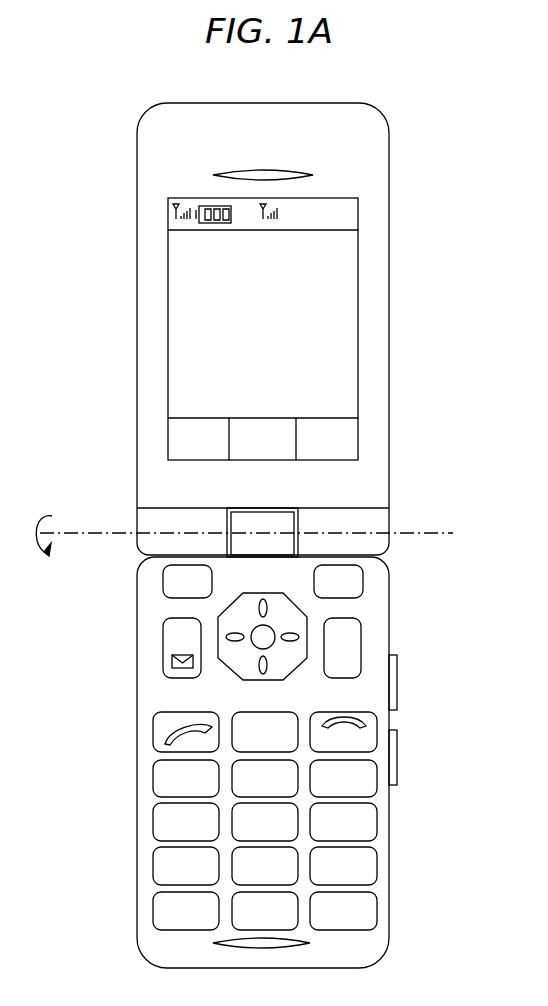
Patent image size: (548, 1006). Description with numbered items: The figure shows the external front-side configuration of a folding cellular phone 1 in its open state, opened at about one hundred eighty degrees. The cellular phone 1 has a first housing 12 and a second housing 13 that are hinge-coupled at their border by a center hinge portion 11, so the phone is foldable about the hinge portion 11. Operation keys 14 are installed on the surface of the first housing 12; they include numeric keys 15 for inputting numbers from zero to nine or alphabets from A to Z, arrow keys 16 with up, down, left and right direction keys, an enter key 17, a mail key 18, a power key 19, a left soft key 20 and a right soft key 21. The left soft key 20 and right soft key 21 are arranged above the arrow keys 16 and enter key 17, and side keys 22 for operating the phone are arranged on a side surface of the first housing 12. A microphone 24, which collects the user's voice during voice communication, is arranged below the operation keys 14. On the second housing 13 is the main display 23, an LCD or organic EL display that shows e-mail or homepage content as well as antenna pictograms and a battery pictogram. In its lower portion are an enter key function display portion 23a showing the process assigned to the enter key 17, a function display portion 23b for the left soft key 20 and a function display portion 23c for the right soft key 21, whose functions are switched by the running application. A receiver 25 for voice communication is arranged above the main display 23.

The cellular phone 1 is at (445, 785).
The hinge portion 11 is at (270, 541).
The first housing 12 is at (389, 592).
The second housing 13 is at (389, 330).
The operation keys 14 is at (125, 580).
The numeric keys 15 is at (405, 758).
The arrow keys 16 is at (245, 601).
The enter key 17 is at (272, 636).
The mail key 18 is at (170, 648).
The power key 19 is at (366, 721).
The left soft key 20 is at (165, 578).
The right soft key 21 is at (356, 581).
The side keys 22 is at (397, 668).
The main display 23 is at (345, 252).
The enter key function display portion 23a is at (262, 432).
The function display portion 23b is at (185, 437).
The function display portion 23c is at (340, 437).
The microphone 24 is at (305, 943).
The receiver 25 is at (306, 172).